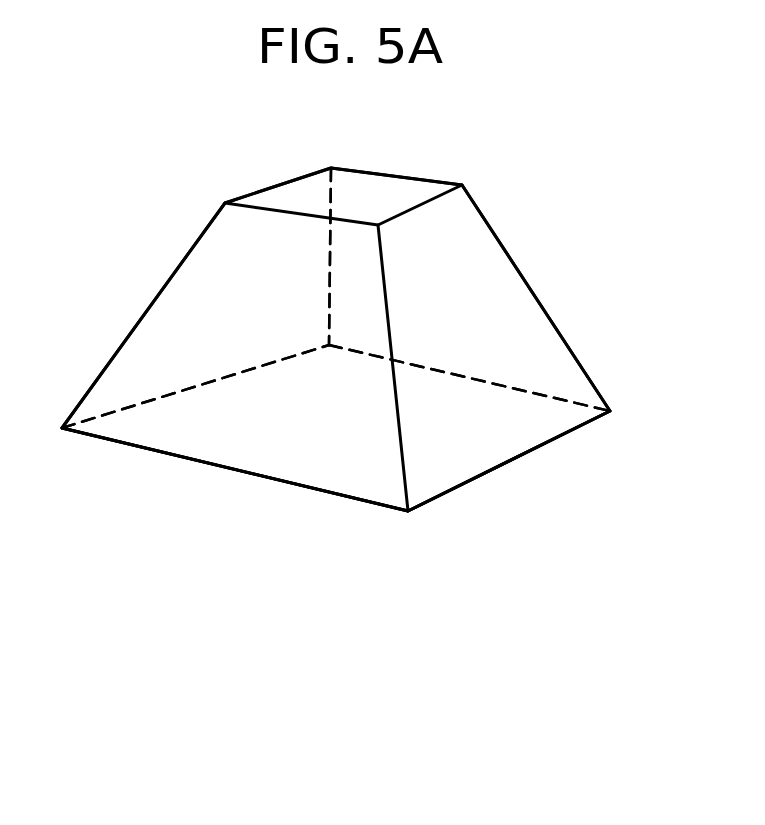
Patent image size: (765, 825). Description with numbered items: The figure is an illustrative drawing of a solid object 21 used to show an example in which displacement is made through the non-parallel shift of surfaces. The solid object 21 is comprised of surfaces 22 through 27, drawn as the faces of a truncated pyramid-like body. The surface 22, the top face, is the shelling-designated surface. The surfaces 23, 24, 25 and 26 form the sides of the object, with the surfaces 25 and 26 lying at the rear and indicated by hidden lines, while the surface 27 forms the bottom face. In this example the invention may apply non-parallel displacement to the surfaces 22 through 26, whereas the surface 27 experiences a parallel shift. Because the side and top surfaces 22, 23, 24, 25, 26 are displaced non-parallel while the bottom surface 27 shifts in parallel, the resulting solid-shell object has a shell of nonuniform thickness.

The truncated pyramid body 21 is at (477, 496).
The shelling-designated surface 22 is at (404, 183).
The surface 23 is at (508, 273).
The surface 24 is at (165, 305).
The surface 25 is at (223, 267).
The surface 26 is at (522, 355).
The surface 27 is at (337, 460).